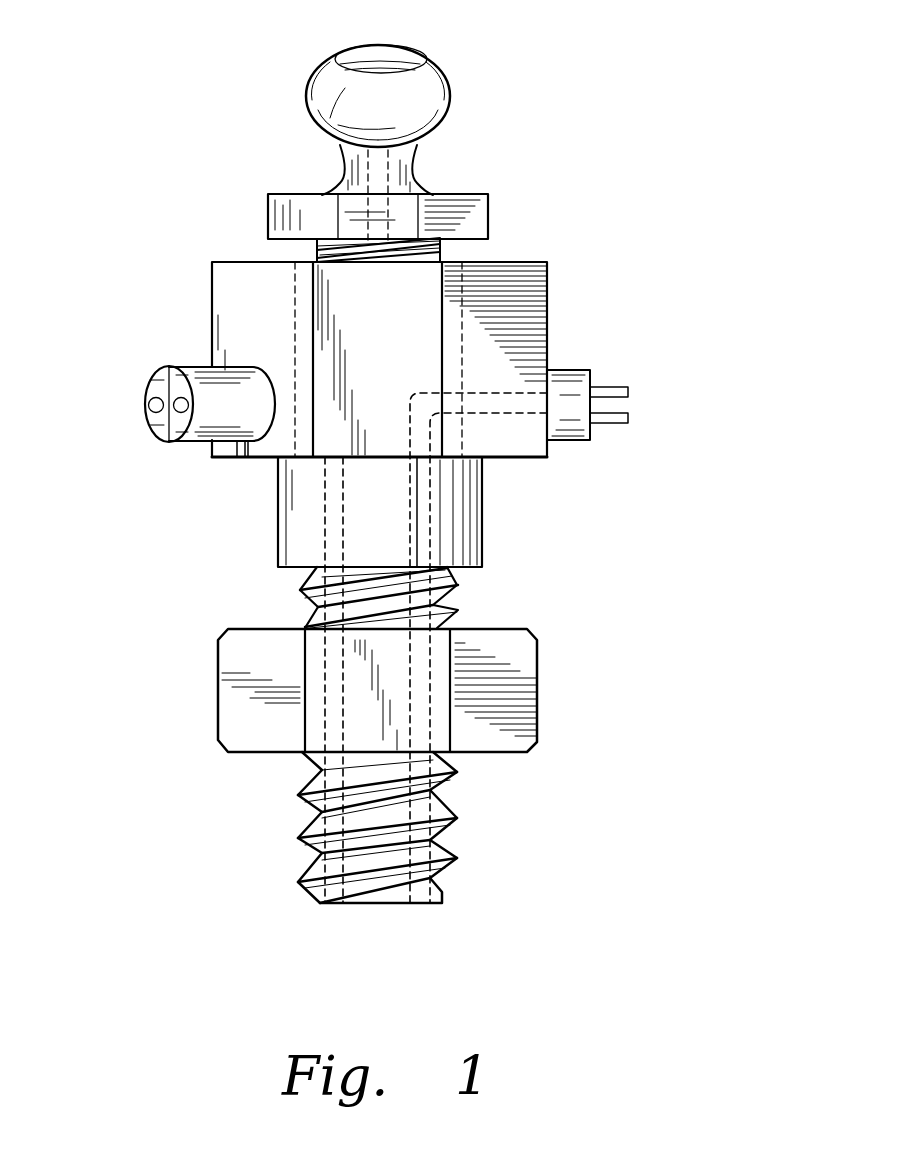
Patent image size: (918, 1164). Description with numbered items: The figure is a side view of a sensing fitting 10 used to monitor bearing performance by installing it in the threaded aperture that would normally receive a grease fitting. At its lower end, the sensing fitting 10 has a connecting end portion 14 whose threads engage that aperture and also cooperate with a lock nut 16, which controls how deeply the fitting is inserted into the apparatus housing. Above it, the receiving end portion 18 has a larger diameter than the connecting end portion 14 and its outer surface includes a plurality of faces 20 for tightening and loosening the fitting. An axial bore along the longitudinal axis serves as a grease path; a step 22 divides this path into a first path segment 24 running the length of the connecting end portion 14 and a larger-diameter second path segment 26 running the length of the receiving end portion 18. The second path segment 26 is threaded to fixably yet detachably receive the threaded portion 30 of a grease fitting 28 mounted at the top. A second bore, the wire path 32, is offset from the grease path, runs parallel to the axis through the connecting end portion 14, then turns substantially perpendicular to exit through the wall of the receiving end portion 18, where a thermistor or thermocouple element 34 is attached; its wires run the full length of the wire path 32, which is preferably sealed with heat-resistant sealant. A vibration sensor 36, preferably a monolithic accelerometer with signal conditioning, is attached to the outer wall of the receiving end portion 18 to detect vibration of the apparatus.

The sensing fitting 10 is at (535, 568).
The connecting end portion 14 is at (455, 782).
The lock nut 16 is at (240, 708).
The receiving end portion 18 is at (212, 323).
The faces 20 is at (232, 273).
The step 22 is at (290, 445).
The first path segment 24 is at (338, 547).
The second path segment 26 is at (403, 340).
The grease fitting 28 is at (435, 70).
The threaded portion 30 is at (438, 258).
The wire path 32 is at (432, 500).
The thermocouple element 34 is at (598, 368).
The vibration sensor 36 is at (143, 393).